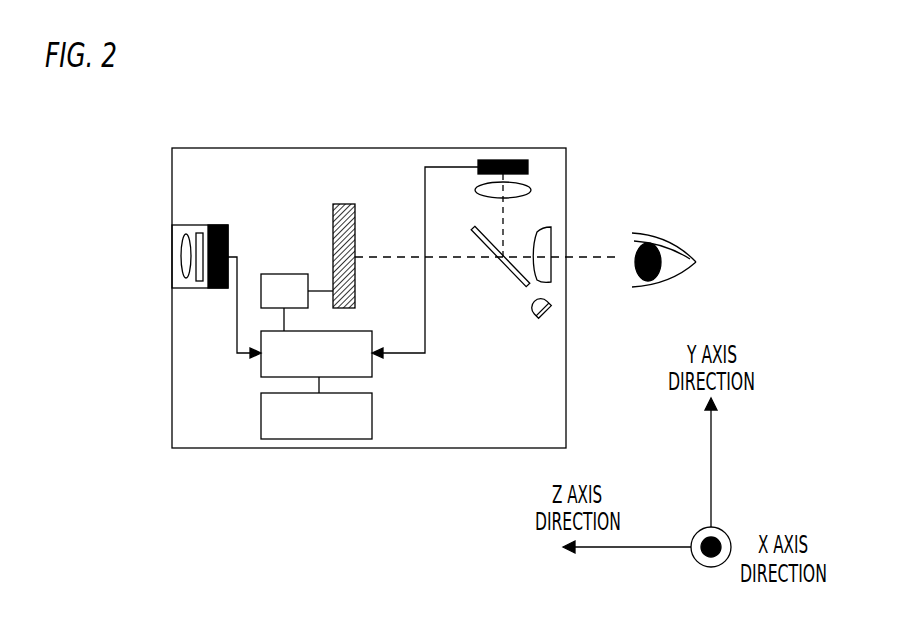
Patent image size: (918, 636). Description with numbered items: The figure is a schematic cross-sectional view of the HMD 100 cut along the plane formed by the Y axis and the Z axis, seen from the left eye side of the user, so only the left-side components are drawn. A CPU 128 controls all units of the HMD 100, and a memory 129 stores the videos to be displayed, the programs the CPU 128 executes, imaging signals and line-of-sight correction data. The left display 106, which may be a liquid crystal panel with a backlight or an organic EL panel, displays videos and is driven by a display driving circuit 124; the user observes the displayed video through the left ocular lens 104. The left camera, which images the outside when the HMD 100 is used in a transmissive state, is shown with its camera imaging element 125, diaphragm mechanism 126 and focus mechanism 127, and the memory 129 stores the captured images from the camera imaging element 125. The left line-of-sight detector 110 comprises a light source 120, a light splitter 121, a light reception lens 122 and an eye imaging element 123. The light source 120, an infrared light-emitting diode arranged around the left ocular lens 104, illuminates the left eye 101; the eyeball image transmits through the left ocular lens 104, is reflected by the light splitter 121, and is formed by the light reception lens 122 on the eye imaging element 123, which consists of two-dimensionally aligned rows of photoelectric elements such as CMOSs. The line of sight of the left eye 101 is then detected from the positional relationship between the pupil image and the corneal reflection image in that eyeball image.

The HMD 100 is at (142, 154).
The left eye 101 is at (655, 232).
The left ocular lens 104 is at (528, 292).
The left display 106 is at (356, 215).
The left line-of-sight detector 110 is at (112, 182).
The light source 120 is at (539, 283).
The light splitter 121 is at (495, 242).
The light reception lens 122 is at (530, 188).
The eye imaging element 123 is at (509, 160).
The display driving circuit 124 is at (283, 274).
The camera imaging element 125 is at (222, 224).
The diaphragm mechanism 126 is at (198, 284).
The focus mechanism 127 is at (176, 258).
The CPU 128 is at (372, 367).
The memory 129 is at (372, 410).